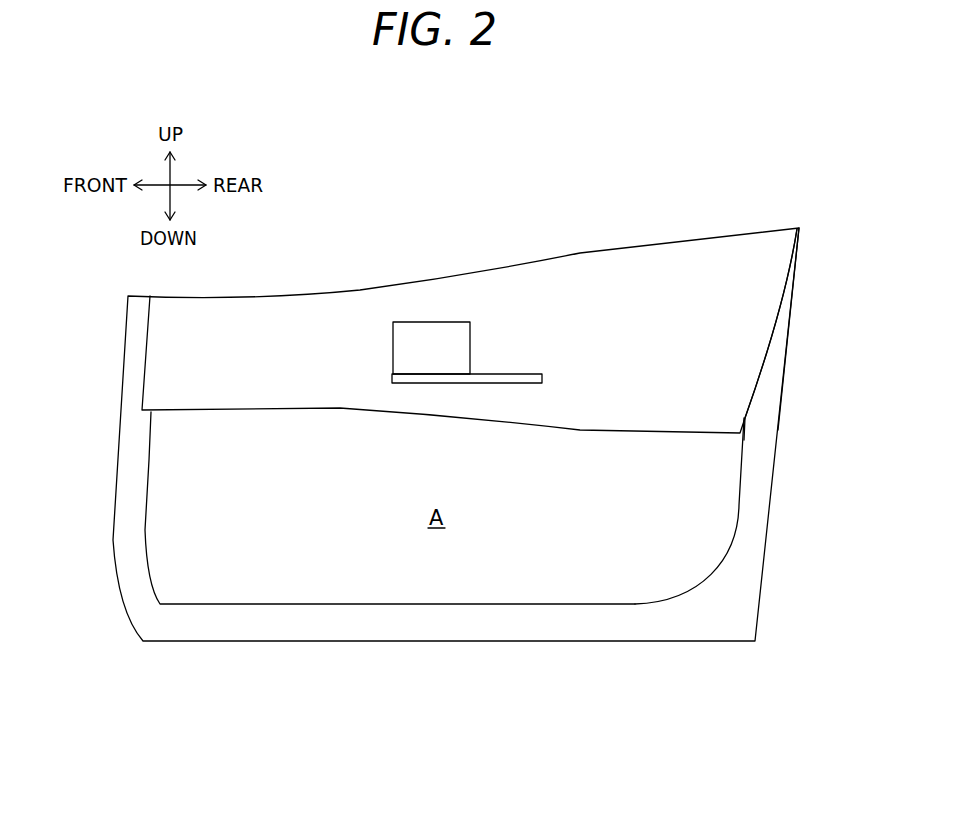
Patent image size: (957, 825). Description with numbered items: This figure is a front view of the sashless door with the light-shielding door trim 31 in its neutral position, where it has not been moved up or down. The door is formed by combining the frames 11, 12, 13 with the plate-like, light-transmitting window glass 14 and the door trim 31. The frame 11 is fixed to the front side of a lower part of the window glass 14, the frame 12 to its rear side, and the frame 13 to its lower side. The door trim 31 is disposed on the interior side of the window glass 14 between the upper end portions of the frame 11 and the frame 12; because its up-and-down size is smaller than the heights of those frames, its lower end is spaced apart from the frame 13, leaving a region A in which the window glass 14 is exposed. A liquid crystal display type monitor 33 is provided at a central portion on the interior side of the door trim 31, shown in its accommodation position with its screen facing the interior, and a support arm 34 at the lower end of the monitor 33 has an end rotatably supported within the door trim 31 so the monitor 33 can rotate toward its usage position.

The frame 11 is at (132, 442).
The frame 12 is at (758, 472).
The frame 13 is at (523, 604).
The window glass 14 is at (700, 507).
The door trim 31 is at (360, 291).
The monitor 33 is at (433, 322).
The support arm 34 is at (495, 383).